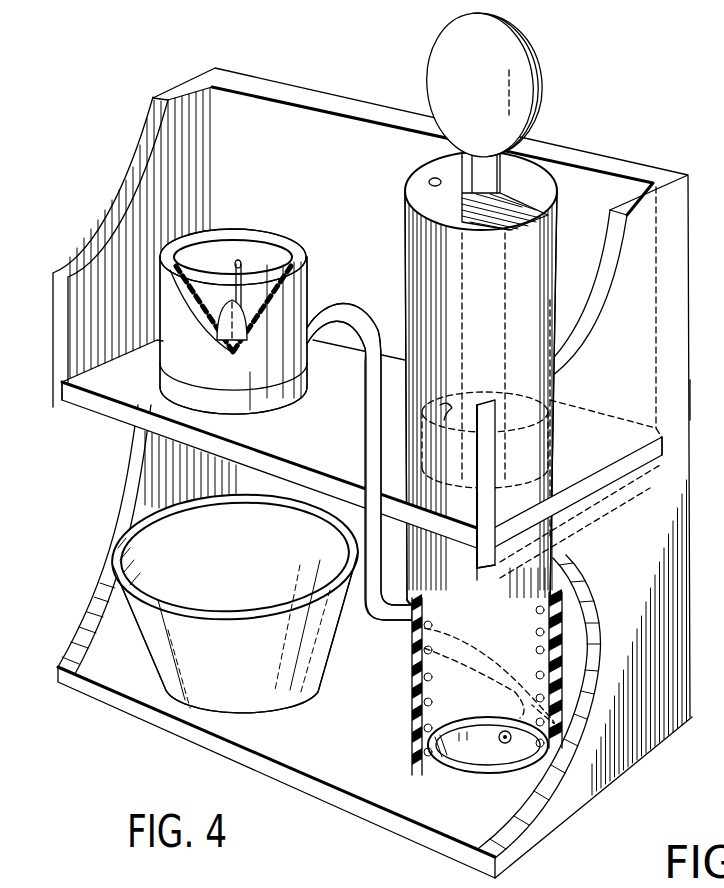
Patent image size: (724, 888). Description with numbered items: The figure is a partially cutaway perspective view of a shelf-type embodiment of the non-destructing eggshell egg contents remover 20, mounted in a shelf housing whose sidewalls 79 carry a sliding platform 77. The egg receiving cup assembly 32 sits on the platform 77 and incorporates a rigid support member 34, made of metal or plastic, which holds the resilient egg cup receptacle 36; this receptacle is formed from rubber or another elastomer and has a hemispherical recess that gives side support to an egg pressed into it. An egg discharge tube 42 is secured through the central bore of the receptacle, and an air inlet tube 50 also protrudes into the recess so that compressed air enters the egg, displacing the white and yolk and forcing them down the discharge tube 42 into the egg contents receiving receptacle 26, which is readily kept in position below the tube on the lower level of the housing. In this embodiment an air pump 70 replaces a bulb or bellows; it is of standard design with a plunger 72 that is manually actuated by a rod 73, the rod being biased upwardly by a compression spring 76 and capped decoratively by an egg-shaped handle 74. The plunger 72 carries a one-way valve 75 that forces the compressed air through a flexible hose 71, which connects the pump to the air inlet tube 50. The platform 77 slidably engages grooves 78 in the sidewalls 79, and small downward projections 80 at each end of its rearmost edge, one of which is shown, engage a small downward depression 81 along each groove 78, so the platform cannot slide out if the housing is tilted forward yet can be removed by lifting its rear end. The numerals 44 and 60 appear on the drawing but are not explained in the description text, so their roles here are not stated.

The egg contents remover 20 is at (617, 151).
The egg contents receiving receptacle 26 is at (272, 700).
The egg receiving cup assembly 32 is at (255, 313).
The support member 34 is at (300, 396).
The egg cup receptacle 36 is at (265, 232).
The egg discharge tube 42 is at (220, 302).
The housing side wall 44 is at (600, 473).
The air inlet tube 50 is at (244, 280).
The housing top edge 60 is at (696, 199).
The air pump 70 is at (560, 229).
The flexible hose 71 is at (363, 311).
The plunger 72 is at (552, 441).
The rod 73 is at (492, 181).
The egg-shaped handle 74 is at (502, 58).
The one-way valve 75 is at (485, 440).
The compression spring 76 is at (414, 684).
The platform 77 is at (313, 448).
The grooves 78 is at (68, 400).
The sidewalls 79 is at (138, 162).
The downward projections 80 is at (657, 462).
The downward depression 81 is at (660, 460).